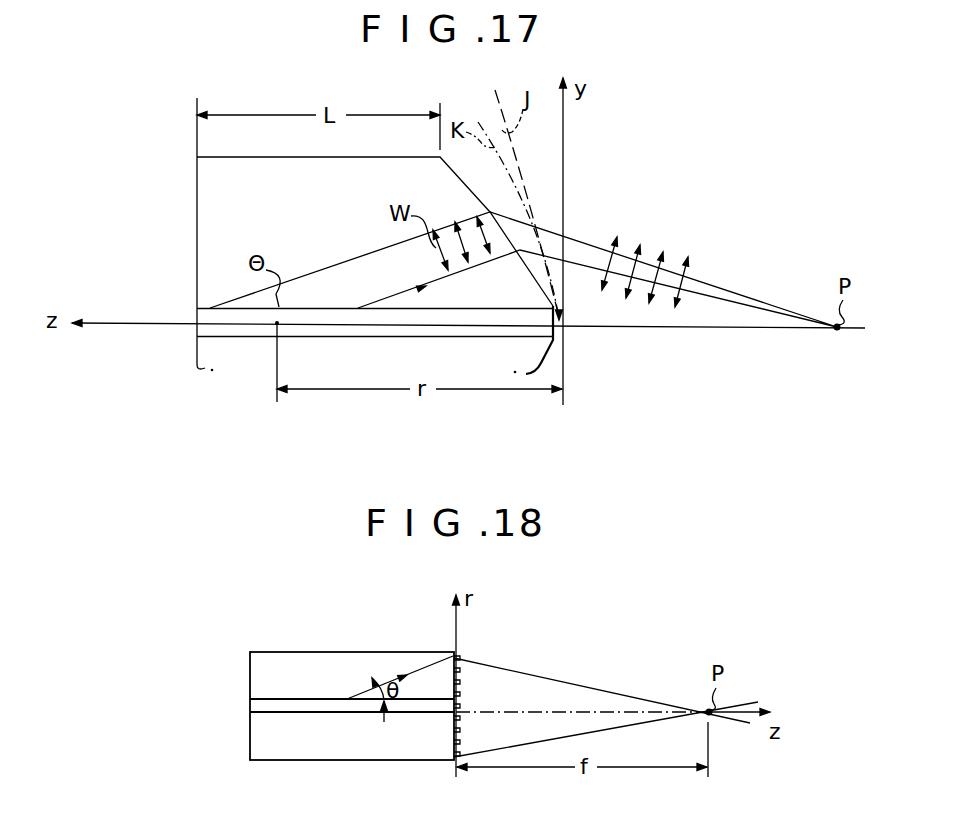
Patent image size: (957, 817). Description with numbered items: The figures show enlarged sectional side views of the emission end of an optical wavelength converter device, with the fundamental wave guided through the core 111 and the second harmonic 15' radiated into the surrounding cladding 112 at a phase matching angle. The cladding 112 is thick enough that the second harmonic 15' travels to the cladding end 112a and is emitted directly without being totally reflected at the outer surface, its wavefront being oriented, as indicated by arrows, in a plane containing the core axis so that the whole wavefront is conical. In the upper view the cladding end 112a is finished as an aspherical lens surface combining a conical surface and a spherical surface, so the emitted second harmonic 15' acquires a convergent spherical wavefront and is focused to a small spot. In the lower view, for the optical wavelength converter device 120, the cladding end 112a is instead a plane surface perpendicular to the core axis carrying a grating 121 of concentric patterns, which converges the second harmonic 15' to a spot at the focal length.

In FIG. 17, the core 111 is at (233, 325).
In FIG. 18, the core 111 is at (278, 703).
In FIG. 17, the cladding 112 is at (208, 222).
In FIG. 18, the cladding 112 is at (334, 672).
In FIG. 18, the cladding end 112a is at (458, 666).
In FIG. 18, the optical wavelength converter device 120 is at (388, 674).
In FIG. 18, the grating 121 is at (462, 728).
In FIG. 17, the second harmonic 15' is at (523, 269).
In FIG. 18, the second harmonic 15' is at (606, 732).